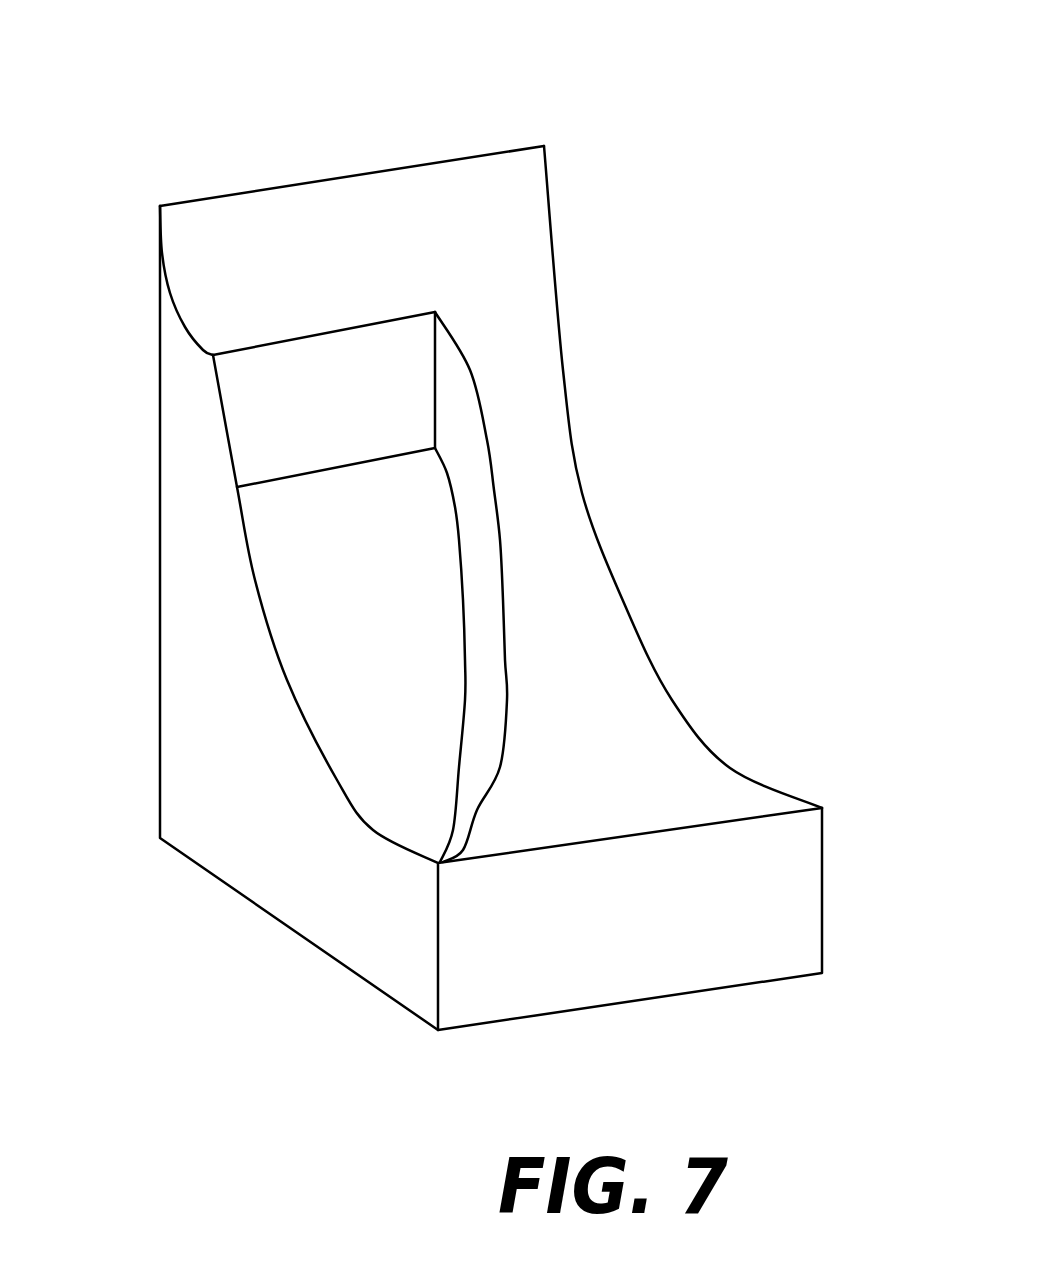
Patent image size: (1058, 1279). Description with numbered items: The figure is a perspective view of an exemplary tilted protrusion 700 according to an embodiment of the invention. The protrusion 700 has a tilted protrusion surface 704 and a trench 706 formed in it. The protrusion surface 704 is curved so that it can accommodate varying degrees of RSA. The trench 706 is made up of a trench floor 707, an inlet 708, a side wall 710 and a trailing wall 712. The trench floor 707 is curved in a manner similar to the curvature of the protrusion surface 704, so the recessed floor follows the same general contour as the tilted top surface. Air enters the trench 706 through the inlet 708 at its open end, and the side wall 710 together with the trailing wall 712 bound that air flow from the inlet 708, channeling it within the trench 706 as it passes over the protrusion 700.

The protrusion 700 is at (665, 262).
The tilted protrusion surface 704 is at (478, 268).
The trench 706 is at (313, 563).
The trench floor 707 is at (403, 665).
The inlet 708 is at (345, 738).
The side wall 710 is at (493, 490).
The trailing wall 712 is at (298, 337).